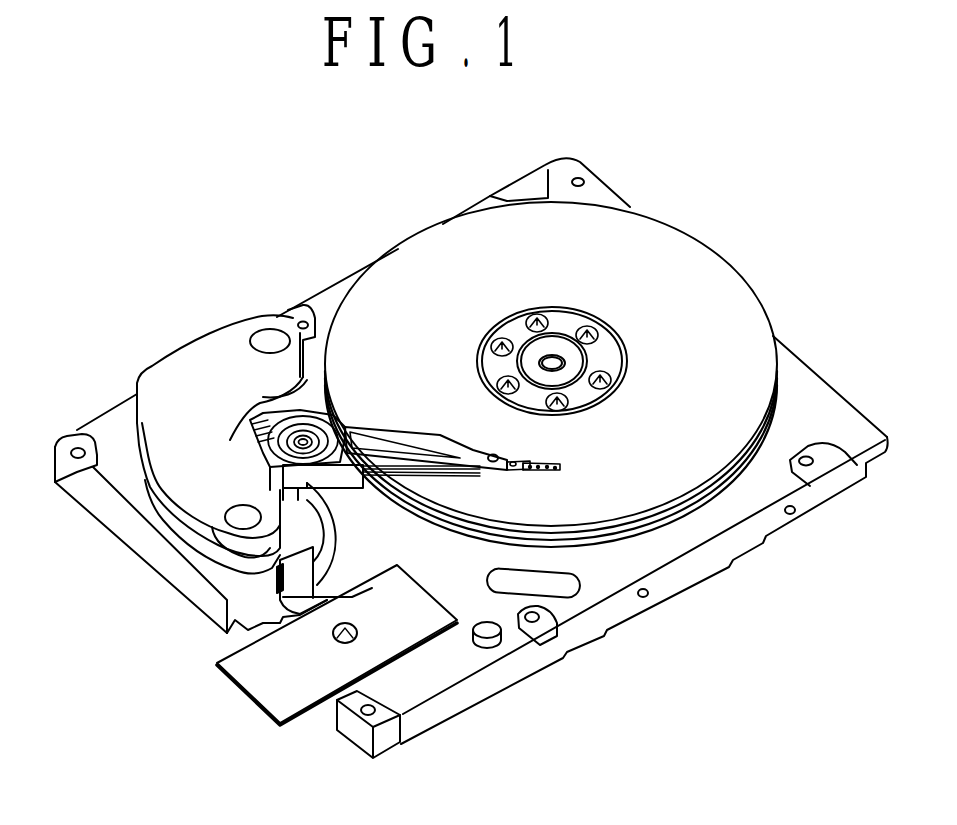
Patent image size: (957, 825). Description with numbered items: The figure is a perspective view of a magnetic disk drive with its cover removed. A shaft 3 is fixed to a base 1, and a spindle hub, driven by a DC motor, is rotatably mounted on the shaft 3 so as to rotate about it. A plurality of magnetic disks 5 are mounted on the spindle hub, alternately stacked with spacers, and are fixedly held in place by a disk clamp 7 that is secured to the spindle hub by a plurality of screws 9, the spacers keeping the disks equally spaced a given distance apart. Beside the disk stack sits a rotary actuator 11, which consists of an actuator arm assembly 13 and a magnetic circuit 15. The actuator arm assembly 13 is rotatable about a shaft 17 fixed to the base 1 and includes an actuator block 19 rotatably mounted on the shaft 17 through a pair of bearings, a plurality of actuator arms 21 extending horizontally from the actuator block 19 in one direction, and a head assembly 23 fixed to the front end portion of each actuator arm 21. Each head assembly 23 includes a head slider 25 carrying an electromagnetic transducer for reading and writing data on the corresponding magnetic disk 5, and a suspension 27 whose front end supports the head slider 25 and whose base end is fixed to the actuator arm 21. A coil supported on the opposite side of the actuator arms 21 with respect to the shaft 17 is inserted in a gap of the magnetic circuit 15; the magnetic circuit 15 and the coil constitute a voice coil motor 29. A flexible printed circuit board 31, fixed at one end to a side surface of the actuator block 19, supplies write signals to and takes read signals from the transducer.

The base 1 is at (800, 383).
The shaft 3 is at (530, 352).
The magnetic disks 5 is at (430, 247).
The disk clamp 7 is at (558, 320).
The screws 9 is at (487, 336).
The rotary actuator 11 is at (314, 407).
The actuator arm assembly 13 is at (377, 425).
The magnetic circuit 15 is at (187, 517).
The shaft 17 is at (303, 441).
The actuator block 19 is at (340, 457).
The actuator arms 21 is at (407, 432).
The head assembly 23 is at (553, 463).
The head slider 25 is at (568, 465).
The suspension 27 is at (514, 466).
The voice coil motor (VCM) 29 is at (202, 356).
The flexible printed circuit board (FPC) 31 is at (283, 593).